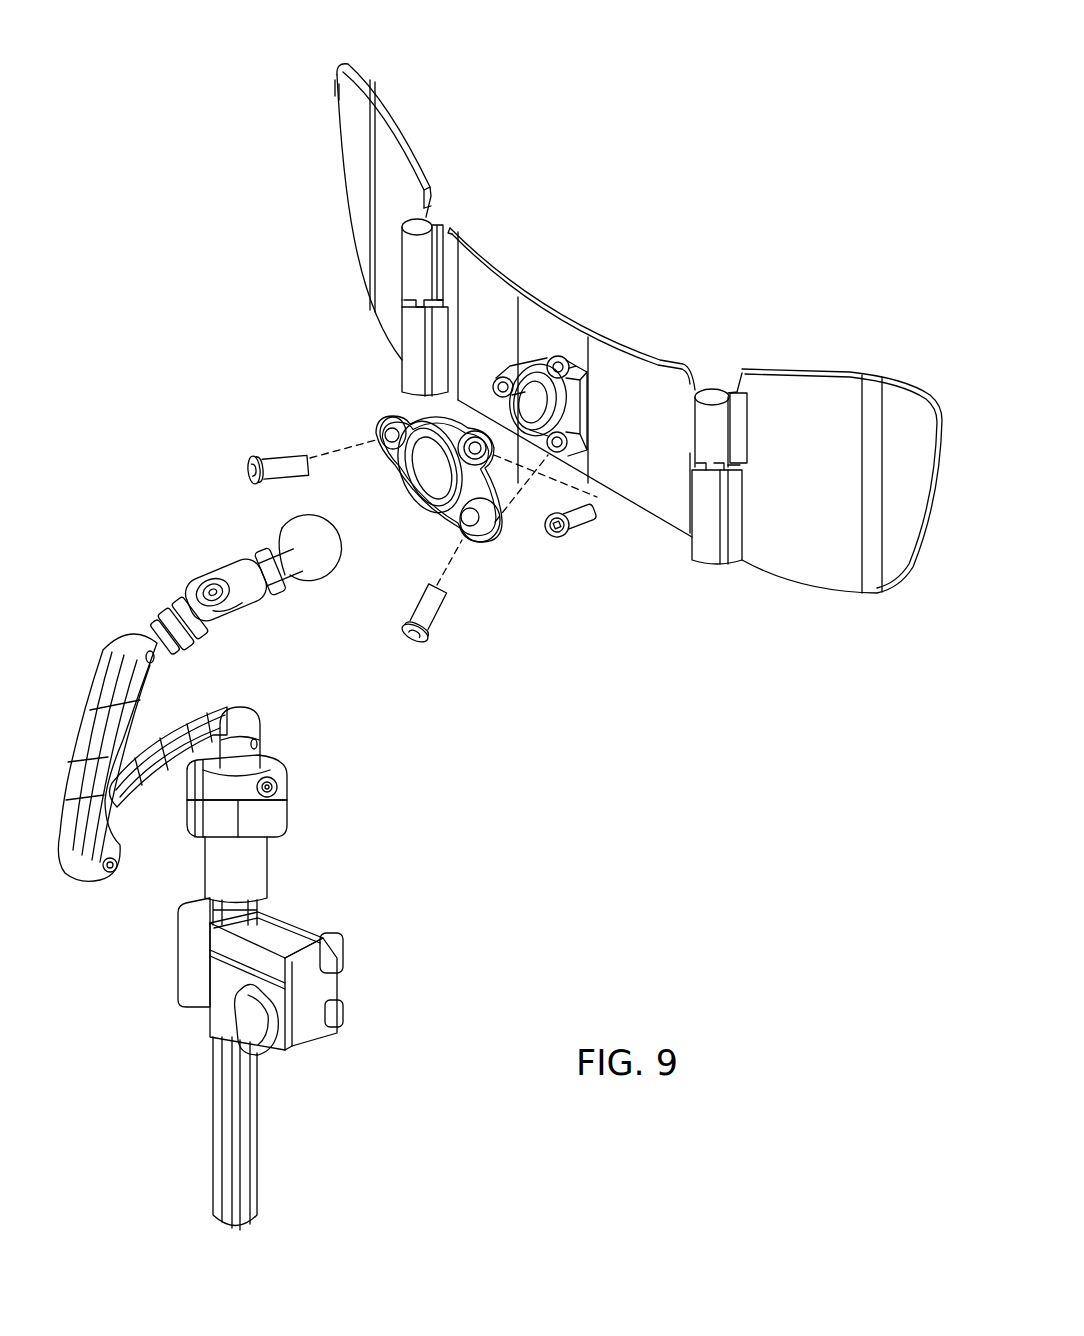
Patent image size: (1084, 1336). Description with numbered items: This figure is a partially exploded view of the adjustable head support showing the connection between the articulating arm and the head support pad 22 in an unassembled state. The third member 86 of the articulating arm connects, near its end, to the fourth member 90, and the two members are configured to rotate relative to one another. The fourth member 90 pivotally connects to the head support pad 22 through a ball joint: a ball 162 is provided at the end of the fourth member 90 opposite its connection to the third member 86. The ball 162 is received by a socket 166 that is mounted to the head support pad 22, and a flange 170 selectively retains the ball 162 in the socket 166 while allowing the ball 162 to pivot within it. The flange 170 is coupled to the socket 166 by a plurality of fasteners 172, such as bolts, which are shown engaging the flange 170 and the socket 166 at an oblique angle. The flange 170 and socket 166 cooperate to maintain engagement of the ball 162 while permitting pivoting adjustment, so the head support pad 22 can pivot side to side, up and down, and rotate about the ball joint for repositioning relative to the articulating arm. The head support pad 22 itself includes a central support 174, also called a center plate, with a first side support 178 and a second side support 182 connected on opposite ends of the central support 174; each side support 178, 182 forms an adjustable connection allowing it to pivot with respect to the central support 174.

The head support pad 22 is at (630, 203).
The first side support 178 is at (398, 122).
The central support 174 is at (645, 357).
The second side support 182 is at (855, 370).
The socket 166 is at (537, 352).
The flange 170 is at (385, 420).
The fasteners 172 is at (280, 465).
The ball 162 is at (310, 558).
The fourth member 90 is at (240, 563).
The third member 86 is at (220, 630).